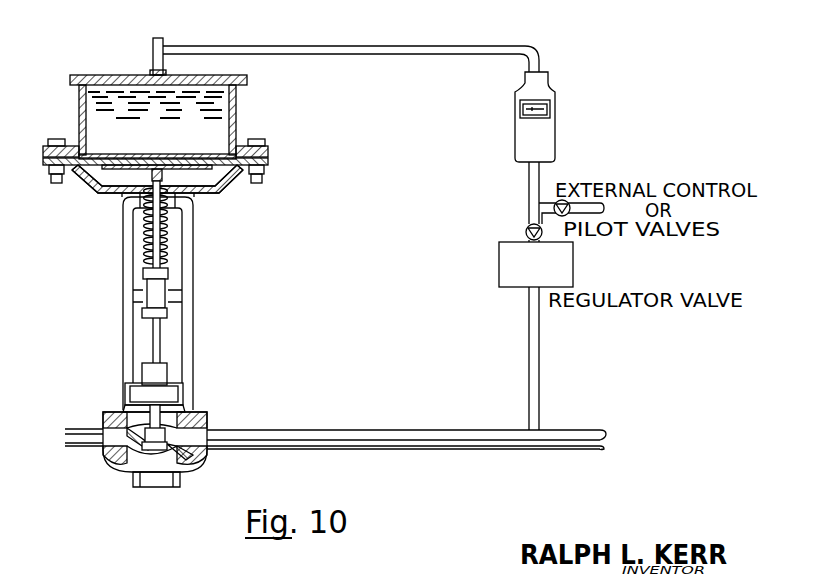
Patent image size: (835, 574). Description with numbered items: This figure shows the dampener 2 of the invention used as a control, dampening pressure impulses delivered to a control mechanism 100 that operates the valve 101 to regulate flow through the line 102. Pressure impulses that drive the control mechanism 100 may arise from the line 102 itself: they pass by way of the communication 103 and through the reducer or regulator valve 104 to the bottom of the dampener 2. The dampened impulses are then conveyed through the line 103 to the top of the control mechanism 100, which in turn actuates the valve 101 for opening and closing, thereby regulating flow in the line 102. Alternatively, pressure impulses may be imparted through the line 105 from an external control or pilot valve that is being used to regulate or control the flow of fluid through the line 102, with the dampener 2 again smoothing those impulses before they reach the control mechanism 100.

The control mechanism 100 is at (80, 98).
The valve 101 is at (147, 443).
The line 102 is at (78, 446).
The communication 103 is at (377, 57).
The reducer or regulator valve 104 is at (507, 283).
The line 105 is at (535, 204).
The dampener 2 is at (564, 116).